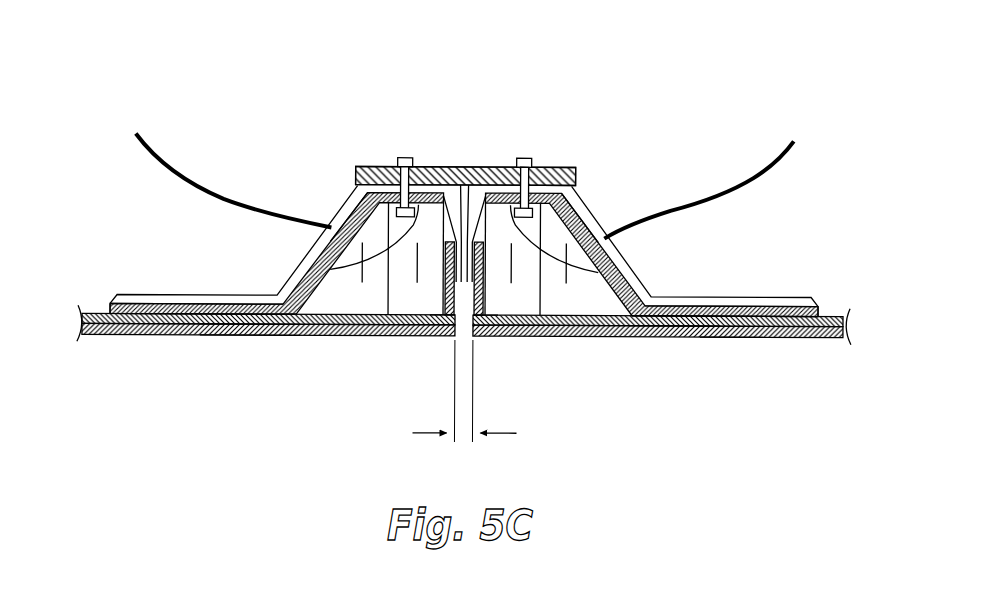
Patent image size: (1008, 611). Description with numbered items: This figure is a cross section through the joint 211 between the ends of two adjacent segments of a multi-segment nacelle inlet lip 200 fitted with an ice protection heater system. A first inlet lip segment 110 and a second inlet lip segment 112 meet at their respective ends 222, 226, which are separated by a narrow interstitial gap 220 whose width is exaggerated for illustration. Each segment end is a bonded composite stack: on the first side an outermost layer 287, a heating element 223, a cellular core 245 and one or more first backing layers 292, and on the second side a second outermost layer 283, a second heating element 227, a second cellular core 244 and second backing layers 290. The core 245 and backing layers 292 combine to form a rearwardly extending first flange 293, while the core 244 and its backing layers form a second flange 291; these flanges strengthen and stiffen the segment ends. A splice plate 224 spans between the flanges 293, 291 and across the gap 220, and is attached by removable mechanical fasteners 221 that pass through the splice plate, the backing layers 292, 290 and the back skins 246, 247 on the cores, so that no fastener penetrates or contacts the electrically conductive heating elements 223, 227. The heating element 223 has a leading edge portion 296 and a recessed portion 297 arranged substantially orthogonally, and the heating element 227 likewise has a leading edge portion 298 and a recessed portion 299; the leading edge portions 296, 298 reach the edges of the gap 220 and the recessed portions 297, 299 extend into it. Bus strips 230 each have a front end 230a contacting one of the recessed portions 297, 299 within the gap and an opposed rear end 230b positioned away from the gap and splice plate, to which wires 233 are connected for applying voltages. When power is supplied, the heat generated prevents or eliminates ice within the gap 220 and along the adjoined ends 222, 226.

The nacelle inlet lip 200 is at (658, 90).
The joint 211 is at (450, 158).
The removable mechanical fasteners 221 is at (396, 157).
The splice plate 224 is at (531, 160).
The bus strips 230 is at (357, 166).
The front end of bus strip 230a is at (465, 165).
The rear end of bus strip 230b is at (312, 250).
The wires 233 is at (153, 148).
The first flange 293 is at (352, 198).
The second flange 291 is at (585, 197).
The first backing layers 292 is at (193, 297).
The second backing layers 290 is at (763, 303).
The first back skin 246 is at (330, 270).
The second back skin 247 is at (598, 272).
The first cellular core 245 is at (373, 298).
The second cellular core 244 is at (555, 298).
The end of inlet lip segment 222 is at (449, 343).
The end of inlet lip segment 226 is at (478, 343).
The second recessed portion 299 is at (437, 318).
The first recessed portion 297 is at (490, 318).
The interstitial gap 220 is at (474, 345).
The first inlet lip segment 110 is at (148, 340).
The second inlet lip segment 112 is at (780, 348).
The first leading edge portion 296 is at (250, 336).
The outermost layer 287 is at (267, 336).
The second leading edge portion 298 is at (673, 336).
The second outermost layer 283 is at (748, 336).
The first heating element 223 is at (80, 305).
The second heating element 227 is at (838, 314).